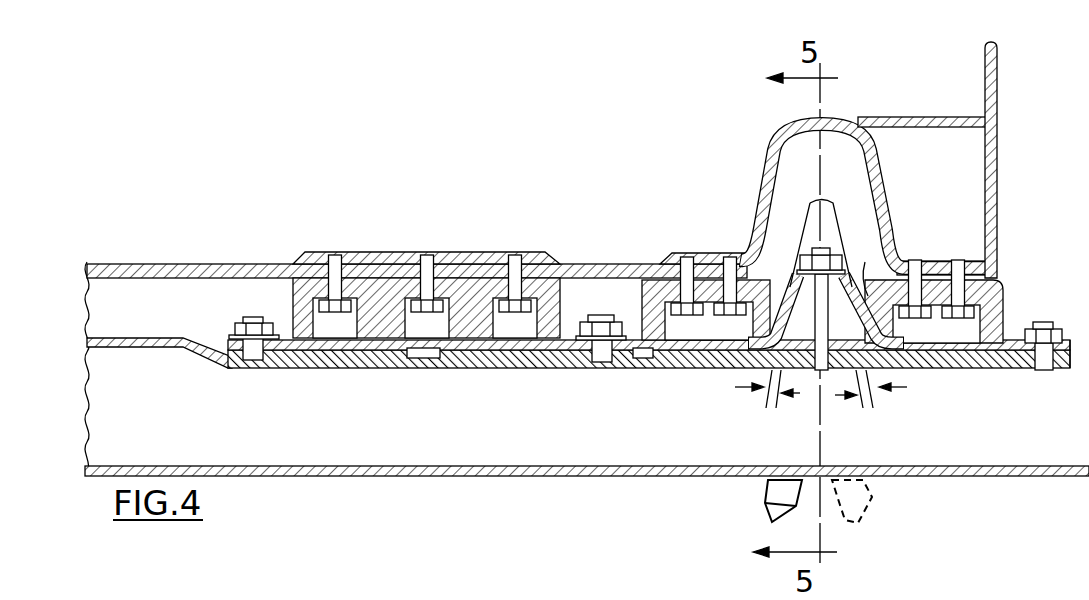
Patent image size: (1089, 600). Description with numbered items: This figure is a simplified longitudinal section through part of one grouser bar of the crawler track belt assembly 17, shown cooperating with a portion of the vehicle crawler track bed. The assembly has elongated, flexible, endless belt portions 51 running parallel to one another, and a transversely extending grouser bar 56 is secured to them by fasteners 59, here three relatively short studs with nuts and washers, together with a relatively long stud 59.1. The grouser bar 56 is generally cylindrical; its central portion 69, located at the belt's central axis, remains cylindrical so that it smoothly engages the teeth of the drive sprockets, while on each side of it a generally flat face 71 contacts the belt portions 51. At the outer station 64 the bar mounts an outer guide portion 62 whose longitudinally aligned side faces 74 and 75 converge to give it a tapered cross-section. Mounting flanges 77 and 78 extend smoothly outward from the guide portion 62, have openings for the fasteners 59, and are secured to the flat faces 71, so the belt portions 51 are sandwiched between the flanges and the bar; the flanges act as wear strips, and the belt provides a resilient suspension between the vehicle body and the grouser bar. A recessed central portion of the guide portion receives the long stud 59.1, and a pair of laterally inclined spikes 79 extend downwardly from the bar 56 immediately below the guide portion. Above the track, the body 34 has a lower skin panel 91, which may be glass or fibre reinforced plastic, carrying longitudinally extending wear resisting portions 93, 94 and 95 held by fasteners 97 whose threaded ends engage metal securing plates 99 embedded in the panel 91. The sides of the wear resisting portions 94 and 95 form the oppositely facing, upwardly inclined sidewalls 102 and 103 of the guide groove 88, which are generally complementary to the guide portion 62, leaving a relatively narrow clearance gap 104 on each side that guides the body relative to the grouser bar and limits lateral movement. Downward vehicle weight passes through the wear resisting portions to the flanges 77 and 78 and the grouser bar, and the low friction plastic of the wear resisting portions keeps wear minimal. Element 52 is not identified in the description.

The crawler track belt assembly 17 is at (1056, 246).
The body 34 is at (1008, 72).
The belt portions 51 is at (353, 370).
The bracket 52 is at (227, 352).
The grouser bar 56 is at (118, 398).
The fasteners 59 is at (253, 360).
The long stud 59.1 is at (816, 376).
The outer guide portion 62 is at (808, 172).
The outer station 64 is at (822, 457).
The central portion 69 is at (147, 367).
The flat face 71 is at (440, 367).
The side face 74 is at (852, 287).
The side face 75 is at (790, 285).
The mounting flange 77 is at (1010, 370).
The mounting flange 78 is at (657, 367).
The spikes 79 is at (768, 507).
The guide groove 88 is at (850, 157).
The lower skin panel 91 is at (207, 263).
The wear resisting portion 93 is at (467, 287).
The wear resisting portion 94 is at (648, 283).
The wear resisting portion 95 is at (992, 290).
The fasteners 97 is at (337, 254).
The securing plates 99 is at (377, 257).
The sidewall 102 is at (760, 233).
The sidewall 103 is at (865, 262).
The clearance gap 104 is at (735, 387).